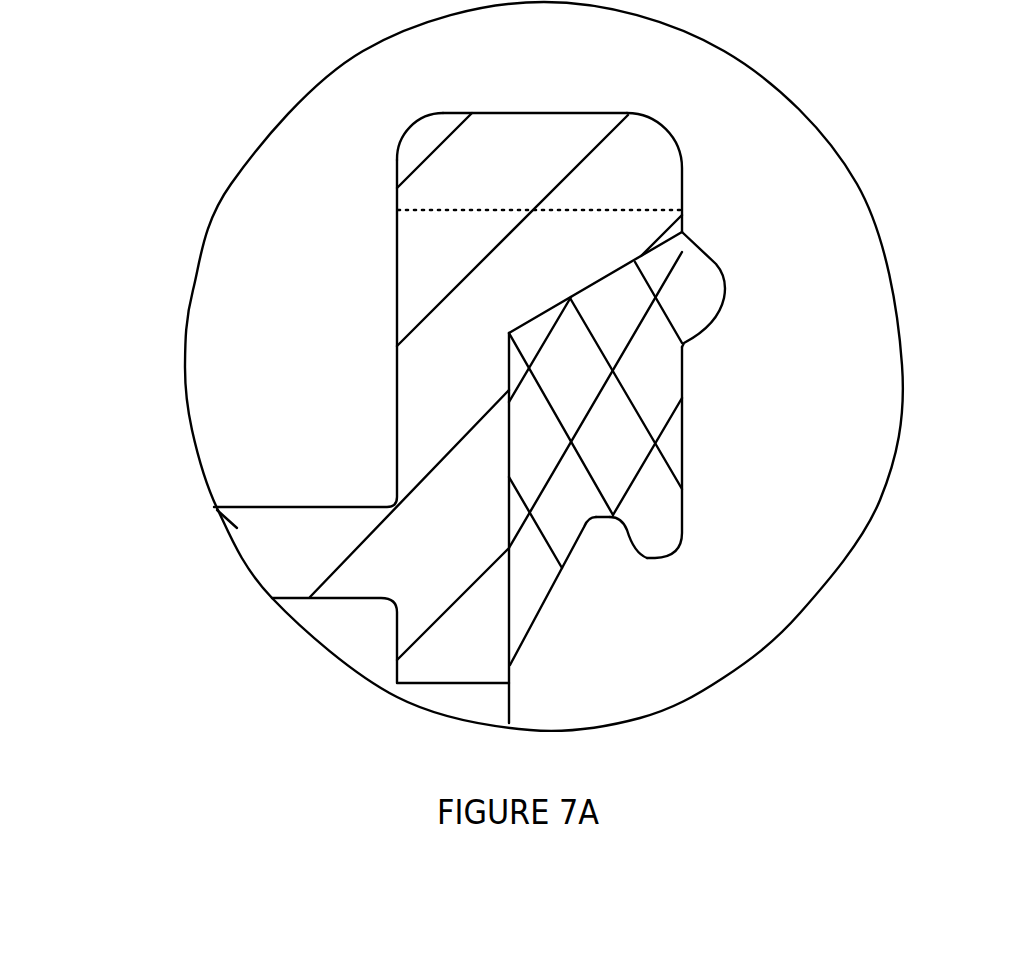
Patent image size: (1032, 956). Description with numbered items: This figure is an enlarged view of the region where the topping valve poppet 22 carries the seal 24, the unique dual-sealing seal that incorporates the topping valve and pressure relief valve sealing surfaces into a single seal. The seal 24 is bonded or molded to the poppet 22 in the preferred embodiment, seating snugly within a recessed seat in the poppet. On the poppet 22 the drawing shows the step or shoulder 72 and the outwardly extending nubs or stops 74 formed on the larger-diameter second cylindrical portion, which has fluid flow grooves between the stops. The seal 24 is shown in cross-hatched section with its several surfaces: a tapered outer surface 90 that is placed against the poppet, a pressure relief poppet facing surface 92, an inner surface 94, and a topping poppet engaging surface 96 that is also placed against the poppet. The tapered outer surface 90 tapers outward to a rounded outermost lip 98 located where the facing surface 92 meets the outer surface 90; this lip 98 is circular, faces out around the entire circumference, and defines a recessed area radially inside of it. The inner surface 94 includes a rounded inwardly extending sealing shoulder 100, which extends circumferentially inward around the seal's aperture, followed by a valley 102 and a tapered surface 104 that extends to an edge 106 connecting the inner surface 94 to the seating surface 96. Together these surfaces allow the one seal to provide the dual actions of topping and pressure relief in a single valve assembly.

The topping valve poppet 22 is at (383, 380).
The seal 24 is at (733, 325).
The step or shoulder 72 is at (390, 257).
The nubs or stops 74 is at (515, 112).
The tapered outer surface 90 is at (600, 279).
The pressure relief poppet facing surface 92 is at (683, 408).
The inner surface 94 is at (602, 572).
The topping poppet engaging surface 96 is at (510, 478).
The rounded outermost lip 98 is at (719, 264).
The sealing shoulder 100 is at (670, 558).
The valley 102 is at (613, 514).
The tapered surface 104 is at (547, 610).
The edge 106 is at (510, 665).